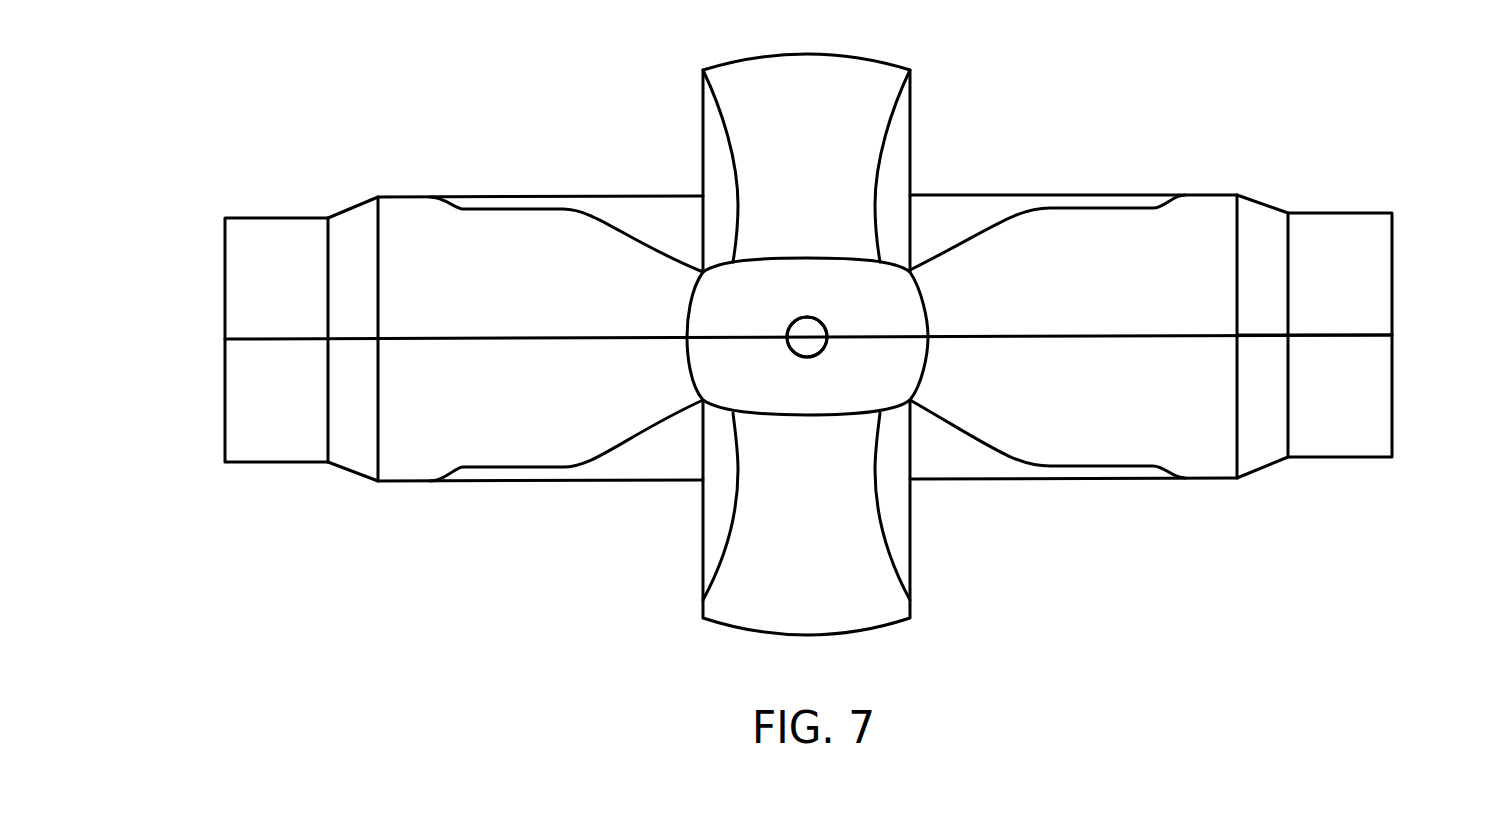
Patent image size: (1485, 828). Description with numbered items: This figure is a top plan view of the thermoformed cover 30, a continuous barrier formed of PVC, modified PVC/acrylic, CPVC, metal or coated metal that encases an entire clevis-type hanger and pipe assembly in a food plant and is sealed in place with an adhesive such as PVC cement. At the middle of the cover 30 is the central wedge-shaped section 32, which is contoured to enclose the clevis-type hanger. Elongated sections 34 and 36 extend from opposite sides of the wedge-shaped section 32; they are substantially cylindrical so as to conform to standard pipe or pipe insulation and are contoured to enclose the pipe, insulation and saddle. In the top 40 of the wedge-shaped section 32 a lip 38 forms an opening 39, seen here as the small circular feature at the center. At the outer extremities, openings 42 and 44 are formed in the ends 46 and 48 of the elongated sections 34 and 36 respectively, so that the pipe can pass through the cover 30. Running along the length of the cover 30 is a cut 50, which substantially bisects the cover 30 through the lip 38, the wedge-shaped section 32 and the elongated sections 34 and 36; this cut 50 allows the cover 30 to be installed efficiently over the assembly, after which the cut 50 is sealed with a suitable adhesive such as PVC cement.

The thermoformed cover 30 is at (545, 110).
The central wedge-shaped section 32 is at (873, 603).
The elongated section 34 is at (480, 481).
The elongated section 36 is at (1117, 479).
The lip 38 is at (827, 335).
The opening 39 is at (802, 342).
The top 40 is at (713, 375).
The opening 42 is at (225, 316).
The opening 44 is at (1392, 283).
The end 46 is at (275, 463).
The end 48 is at (1337, 457).
The cut 50 is at (1370, 336).